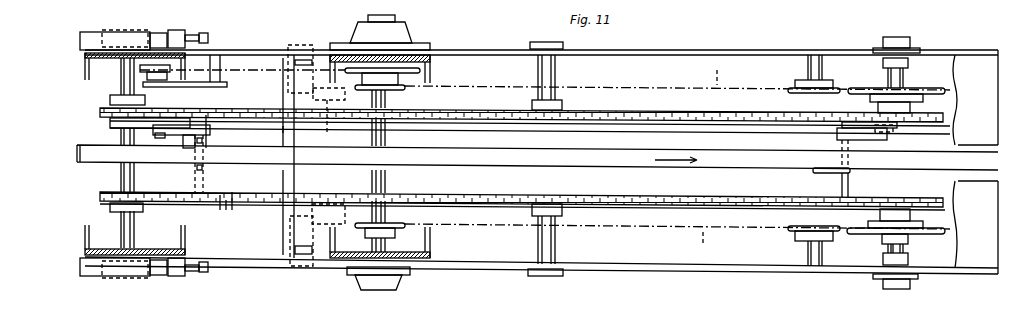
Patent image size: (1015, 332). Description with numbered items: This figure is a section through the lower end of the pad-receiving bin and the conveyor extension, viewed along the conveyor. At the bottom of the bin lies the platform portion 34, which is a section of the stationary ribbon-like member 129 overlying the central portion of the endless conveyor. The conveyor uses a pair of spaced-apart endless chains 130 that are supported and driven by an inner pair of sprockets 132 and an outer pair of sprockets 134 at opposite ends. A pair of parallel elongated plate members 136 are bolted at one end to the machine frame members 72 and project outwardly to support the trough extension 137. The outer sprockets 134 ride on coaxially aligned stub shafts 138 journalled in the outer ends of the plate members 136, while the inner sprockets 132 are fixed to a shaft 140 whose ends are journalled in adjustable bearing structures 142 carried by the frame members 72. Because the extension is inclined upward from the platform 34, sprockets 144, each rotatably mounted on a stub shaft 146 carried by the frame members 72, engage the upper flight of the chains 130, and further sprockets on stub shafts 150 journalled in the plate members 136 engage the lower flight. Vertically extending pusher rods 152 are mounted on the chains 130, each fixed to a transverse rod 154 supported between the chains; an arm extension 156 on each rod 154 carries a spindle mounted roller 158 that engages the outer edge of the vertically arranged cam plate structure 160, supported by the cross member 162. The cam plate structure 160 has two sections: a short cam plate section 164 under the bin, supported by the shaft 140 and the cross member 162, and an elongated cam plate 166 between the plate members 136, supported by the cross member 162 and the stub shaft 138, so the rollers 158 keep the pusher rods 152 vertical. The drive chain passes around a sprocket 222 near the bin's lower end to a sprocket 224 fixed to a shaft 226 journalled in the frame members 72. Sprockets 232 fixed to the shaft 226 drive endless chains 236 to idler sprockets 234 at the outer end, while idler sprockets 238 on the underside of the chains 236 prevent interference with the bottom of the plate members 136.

The adjustable bearing structures 142 is at (140, 31).
The machine frame members 72 is at (84, 63).
The sprocket 222 is at (137, 68).
The inner pair of sprockets 132 is at (108, 99).
The spindle mounted roller 158 is at (168, 120).
The sprocket 224 is at (407, 68).
The shaft 226 is at (392, 97).
The stub shafts 150 is at (556, 70).
The elongated plate members 136 is at (722, 55).
The endless chains 236 is at (700, 161).
The idler sprockets 238 is at (785, 80).
The idler sprockets 234 is at (868, 87).
The trough extension 137 is at (982, 136).
The endless chains 130 is at (742, 112).
The outer pair of sprockets 134 is at (905, 122).
The short cam plate section 164 is at (283, 129).
The sprockets 144 is at (322, 94).
The elongated cam plate 166 is at (432, 126).
The cam plate structure 160 is at (665, 133).
The arm extension 156 is at (187, 136).
The transverse rod 154 is at (197, 178).
The platform portion 34 is at (300, 166).
The stationary ribbon-like member 129 is at (531, 168).
The pusher rods 152 is at (813, 171).
The shaft 140 is at (132, 219).
The cross member 162 is at (223, 208).
The stub shaft 146 is at (290, 208).
The sprockets 232 is at (398, 228).
The stub shafts 138 is at (905, 249).